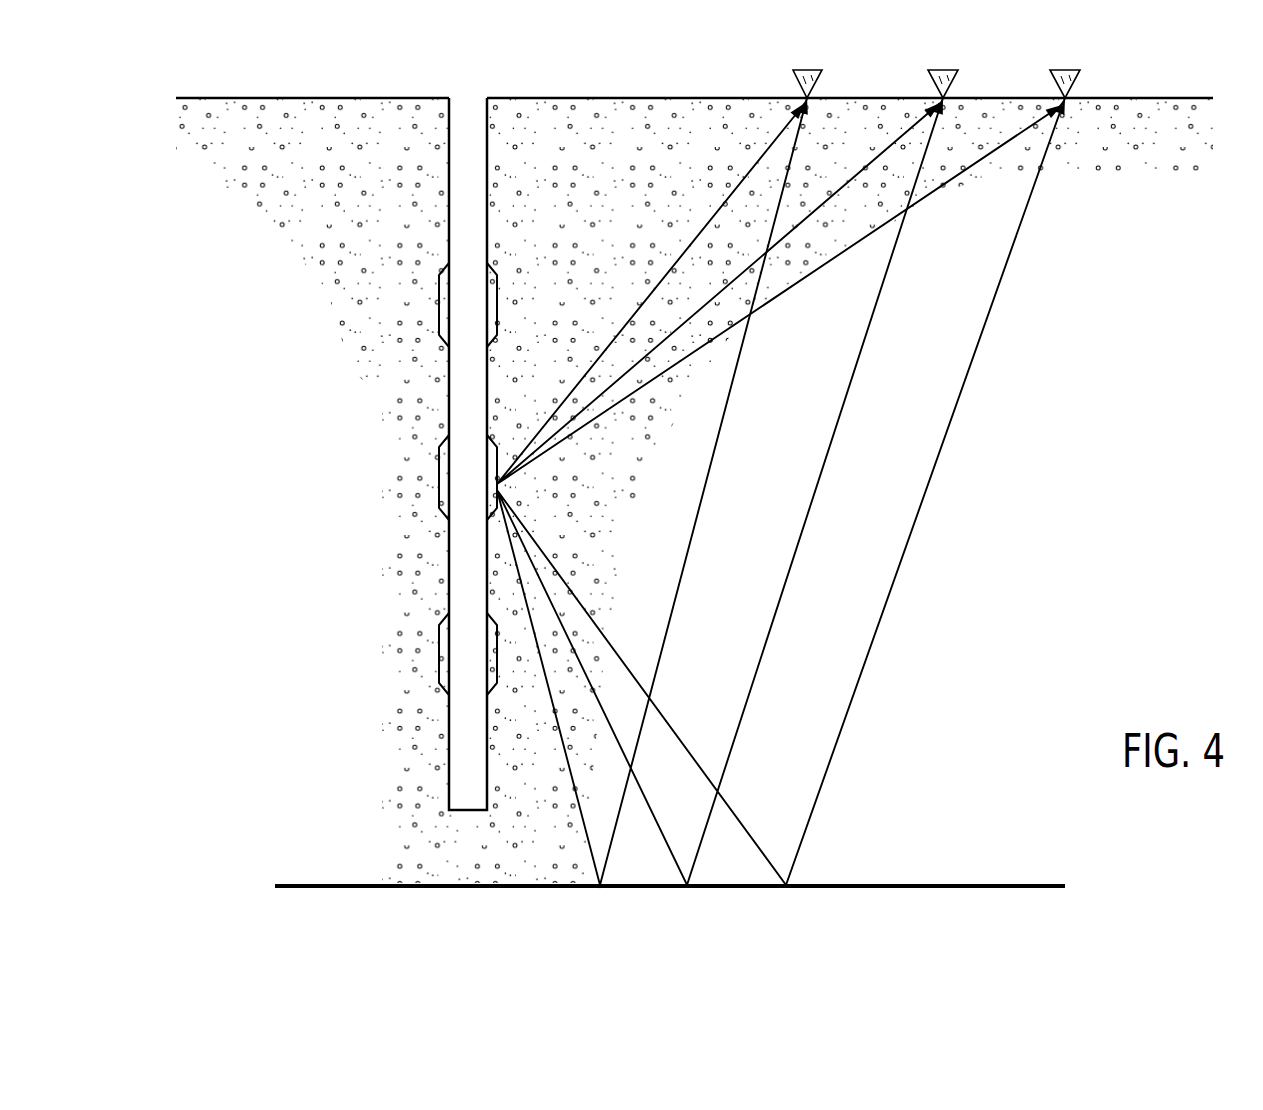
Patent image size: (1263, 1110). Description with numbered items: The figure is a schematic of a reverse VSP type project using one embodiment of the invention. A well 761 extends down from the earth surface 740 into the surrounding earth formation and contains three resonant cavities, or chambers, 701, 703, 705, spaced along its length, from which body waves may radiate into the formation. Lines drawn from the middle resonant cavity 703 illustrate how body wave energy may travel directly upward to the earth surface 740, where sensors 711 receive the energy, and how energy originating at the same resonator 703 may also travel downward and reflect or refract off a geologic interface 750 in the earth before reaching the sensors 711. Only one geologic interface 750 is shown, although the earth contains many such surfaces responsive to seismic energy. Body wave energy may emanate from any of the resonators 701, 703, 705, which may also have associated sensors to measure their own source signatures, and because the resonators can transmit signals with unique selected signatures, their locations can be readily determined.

The earth surface 740 is at (197, 98).
The well 761 is at (467, 93).
The resonant cavity 701 is at (439, 300).
The resonant cavity 703 is at (439, 477).
The resonant cavity 705 is at (439, 655).
The sensors 711 is at (812, 68).
The geologic interface 750 is at (293, 885).